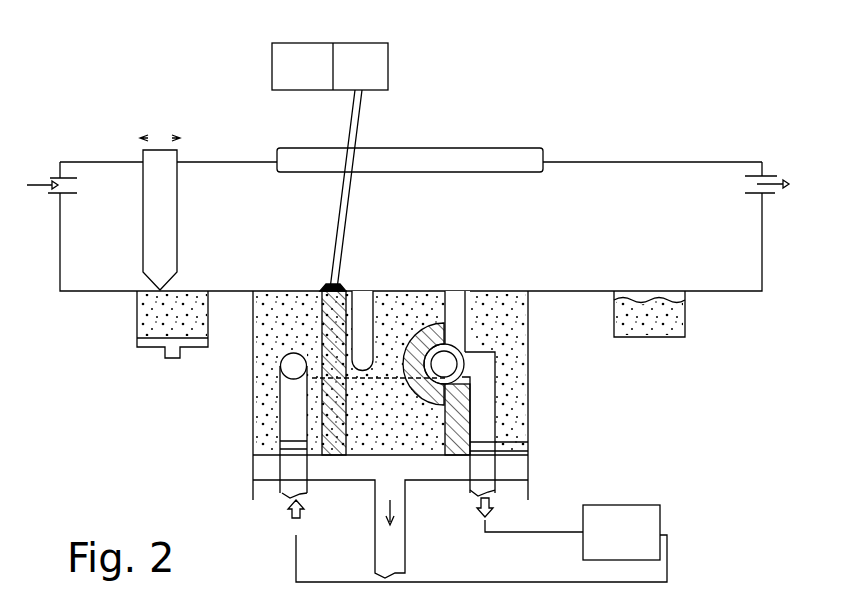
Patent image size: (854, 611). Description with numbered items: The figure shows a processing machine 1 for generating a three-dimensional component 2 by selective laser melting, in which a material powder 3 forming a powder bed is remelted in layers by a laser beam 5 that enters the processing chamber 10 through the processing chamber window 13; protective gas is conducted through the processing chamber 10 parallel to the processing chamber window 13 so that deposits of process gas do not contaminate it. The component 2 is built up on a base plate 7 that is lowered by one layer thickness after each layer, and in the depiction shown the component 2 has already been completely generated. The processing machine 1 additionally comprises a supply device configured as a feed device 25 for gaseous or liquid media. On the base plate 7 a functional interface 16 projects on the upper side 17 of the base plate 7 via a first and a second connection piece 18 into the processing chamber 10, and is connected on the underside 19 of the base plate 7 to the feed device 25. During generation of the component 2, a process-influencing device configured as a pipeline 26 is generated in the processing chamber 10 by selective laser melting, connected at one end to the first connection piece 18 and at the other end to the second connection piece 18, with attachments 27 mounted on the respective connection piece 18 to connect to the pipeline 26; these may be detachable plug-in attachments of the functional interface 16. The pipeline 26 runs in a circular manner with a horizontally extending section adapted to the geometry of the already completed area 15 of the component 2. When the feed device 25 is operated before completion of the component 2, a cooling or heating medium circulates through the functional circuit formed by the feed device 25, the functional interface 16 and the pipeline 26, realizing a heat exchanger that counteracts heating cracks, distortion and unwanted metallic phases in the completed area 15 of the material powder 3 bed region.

The processing machine 1 is at (122, 92).
The three-dimensional component 2 is at (320, 290).
The material powder 3 is at (513, 333).
The laser beam 5 is at (358, 108).
The base plate 7 is at (262, 466).
The processing chamber 10 is at (660, 198).
The processing chamber window 13 is at (505, 162).
The completed area 15 is at (370, 350).
The functional interface 16 is at (290, 494).
The upper side 17 is at (256, 447).
The connection piece 18 is at (288, 440).
The underside 19 is at (268, 490).
The feed device 25 is at (650, 520).
The pipeline 26 is at (310, 345).
The attachments 27 is at (282, 420).